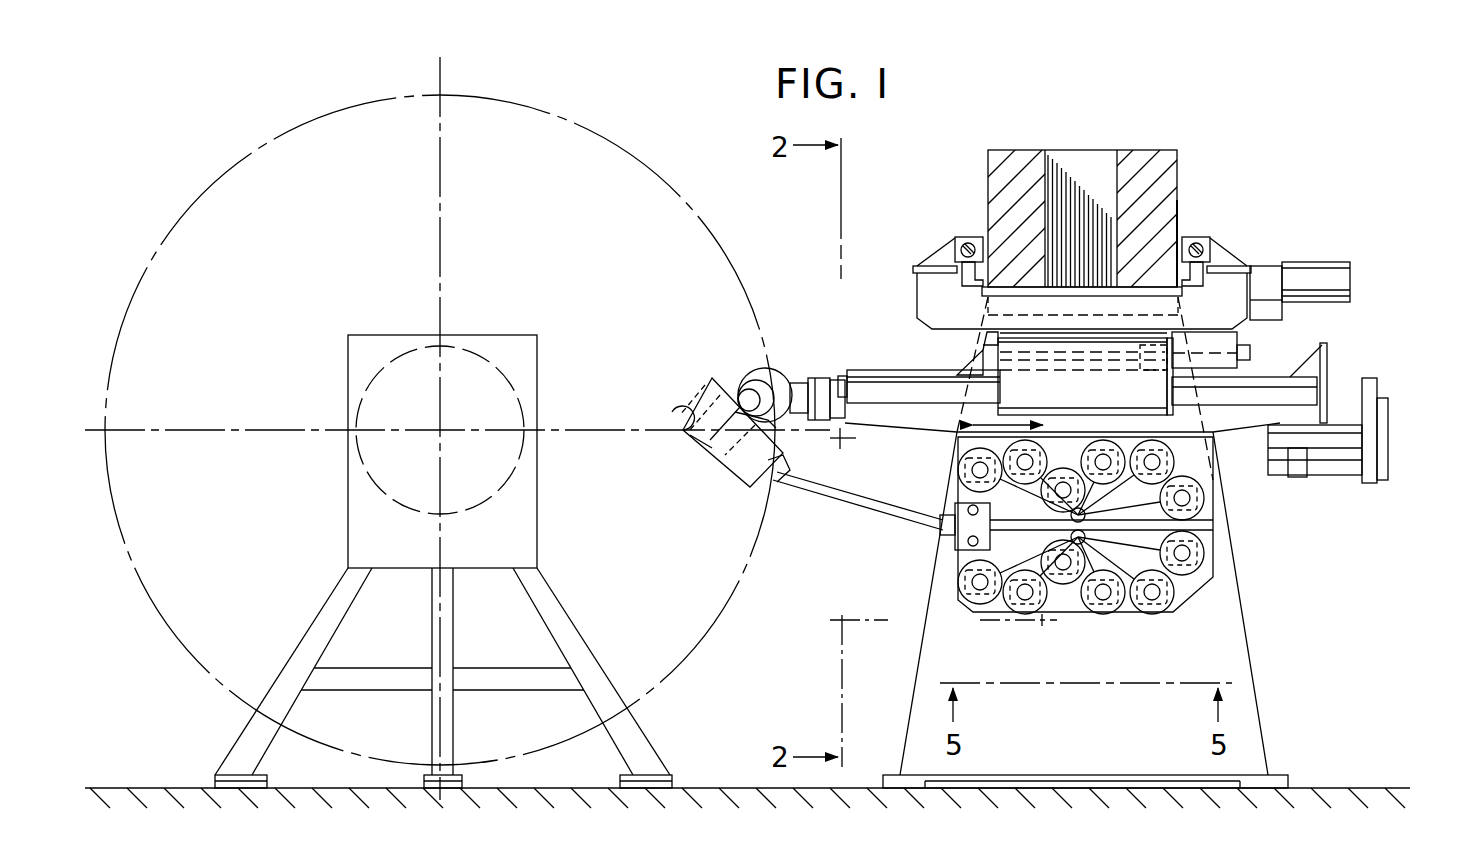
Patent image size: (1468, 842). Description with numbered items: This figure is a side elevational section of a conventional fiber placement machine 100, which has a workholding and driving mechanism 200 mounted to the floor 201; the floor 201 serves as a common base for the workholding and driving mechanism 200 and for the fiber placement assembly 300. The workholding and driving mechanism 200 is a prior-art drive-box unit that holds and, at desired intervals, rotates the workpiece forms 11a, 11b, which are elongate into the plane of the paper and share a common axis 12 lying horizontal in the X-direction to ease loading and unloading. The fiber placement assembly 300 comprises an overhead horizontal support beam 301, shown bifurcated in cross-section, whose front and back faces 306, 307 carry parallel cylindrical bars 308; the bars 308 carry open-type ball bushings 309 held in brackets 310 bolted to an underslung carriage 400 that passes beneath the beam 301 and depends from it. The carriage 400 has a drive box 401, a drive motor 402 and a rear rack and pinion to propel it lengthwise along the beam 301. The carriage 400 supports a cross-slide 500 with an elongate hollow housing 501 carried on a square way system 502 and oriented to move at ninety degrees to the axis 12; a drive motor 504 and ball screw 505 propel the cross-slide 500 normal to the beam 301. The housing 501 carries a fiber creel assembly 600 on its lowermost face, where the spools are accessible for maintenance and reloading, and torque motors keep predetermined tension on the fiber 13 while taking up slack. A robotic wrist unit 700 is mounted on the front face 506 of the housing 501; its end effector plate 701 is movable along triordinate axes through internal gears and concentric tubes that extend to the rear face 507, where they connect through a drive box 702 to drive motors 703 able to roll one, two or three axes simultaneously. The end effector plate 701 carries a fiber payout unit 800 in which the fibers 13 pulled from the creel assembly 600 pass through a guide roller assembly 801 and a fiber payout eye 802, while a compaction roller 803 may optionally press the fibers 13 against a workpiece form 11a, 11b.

The fiber placement machine 100 is at (1004, 124).
The workholding and driving mechanism 200 is at (540, 376).
The floor 201 is at (727, 788).
The common axis 12 is at (436, 426).
The workpiece form 11a is at (398, 356).
The workpiece form 11b is at (322, 114).
The fiber placement assembly 300 is at (1181, 147).
The overhead horizontal support beam 301 is at (1170, 183).
The front face 306 is at (988, 198).
The back face 307 is at (1178, 212).
The cylindrical bars 308 is at (968, 243).
The open-type ball bushings 309 is at (1210, 238).
The brackets 310 is at (950, 243).
The underslung carriage 400 is at (1236, 326).
The drive box 401 is at (1282, 312).
The drive motor 402 is at (1350, 285).
The cross-slide 500 is at (961, 428).
The cross-slide housing 501 is at (880, 430).
The square way system 502 is at (852, 372).
The drive motor 504 is at (1237, 341).
The ball screw 505 is at (988, 358).
The front face 506 is at (836, 441).
The rear face 507 is at (1327, 370).
The fiber creel assembly 600 is at (1090, 615).
The robotic wrist unit 700 is at (779, 351).
The end effector plate 701 is at (768, 424).
The drive box 702 is at (1365, 394).
The drive motors 703 is at (1298, 478).
The fiber payout unit 800 is at (714, 479).
The guide roller assembly 801 is at (775, 478).
The fiber payout eye 802 is at (692, 440).
The compaction roller 803 is at (672, 416).
The fibers 13 is at (903, 526).